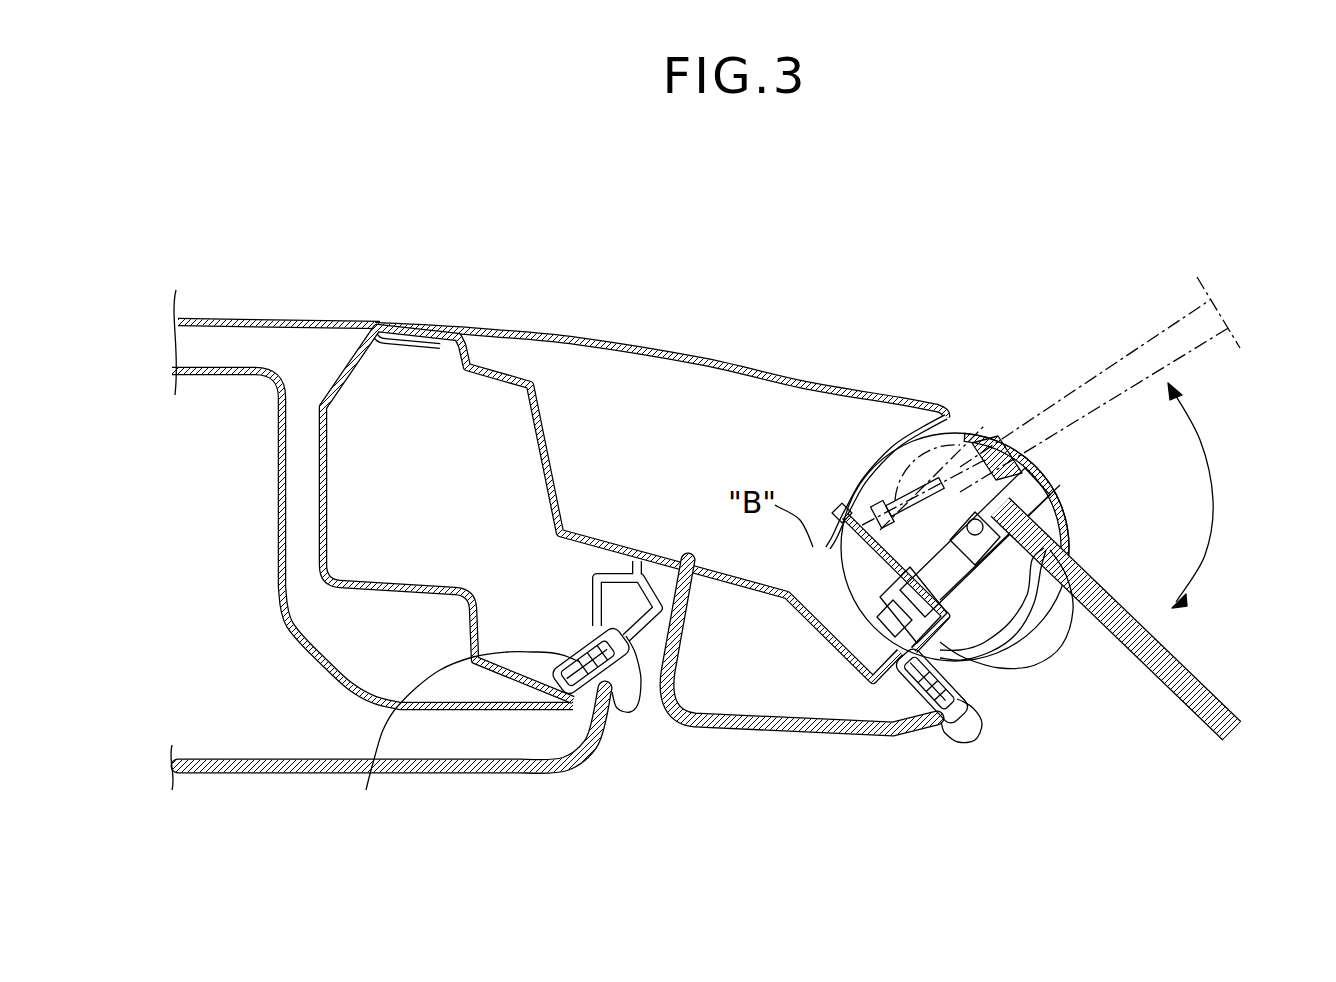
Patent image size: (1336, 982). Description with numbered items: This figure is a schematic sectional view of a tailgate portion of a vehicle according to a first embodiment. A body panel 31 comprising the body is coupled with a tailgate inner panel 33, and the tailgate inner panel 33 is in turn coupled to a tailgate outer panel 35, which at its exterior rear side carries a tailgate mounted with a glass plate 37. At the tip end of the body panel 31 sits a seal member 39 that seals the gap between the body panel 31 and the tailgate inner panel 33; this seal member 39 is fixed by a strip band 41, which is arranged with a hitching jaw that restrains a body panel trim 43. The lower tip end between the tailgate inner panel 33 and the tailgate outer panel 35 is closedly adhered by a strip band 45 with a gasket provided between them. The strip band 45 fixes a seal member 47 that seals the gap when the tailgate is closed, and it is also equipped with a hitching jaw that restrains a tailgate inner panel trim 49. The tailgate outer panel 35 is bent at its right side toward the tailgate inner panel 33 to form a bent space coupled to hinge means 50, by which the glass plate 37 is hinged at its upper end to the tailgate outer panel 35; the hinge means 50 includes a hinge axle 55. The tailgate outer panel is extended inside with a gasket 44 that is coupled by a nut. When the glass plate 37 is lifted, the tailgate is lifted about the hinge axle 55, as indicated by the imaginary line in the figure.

The body panel 31 is at (283, 318).
The tailgate inner panel 33 is at (550, 457).
The tailgate outer panel 35 is at (712, 378).
The glass plate 37 is at (1190, 660).
The seal member 39 is at (641, 642).
The strip band 41 is at (366, 790).
The body panel trim 43 is at (520, 775).
The gasket 44 is at (832, 522).
The strip band 45 is at (968, 742).
The seal member 47 is at (1047, 657).
The tailgate inner panel trim 49 is at (793, 735).
The hinge means 50 is at (1000, 430).
The hinge axle 55 is at (1053, 518).